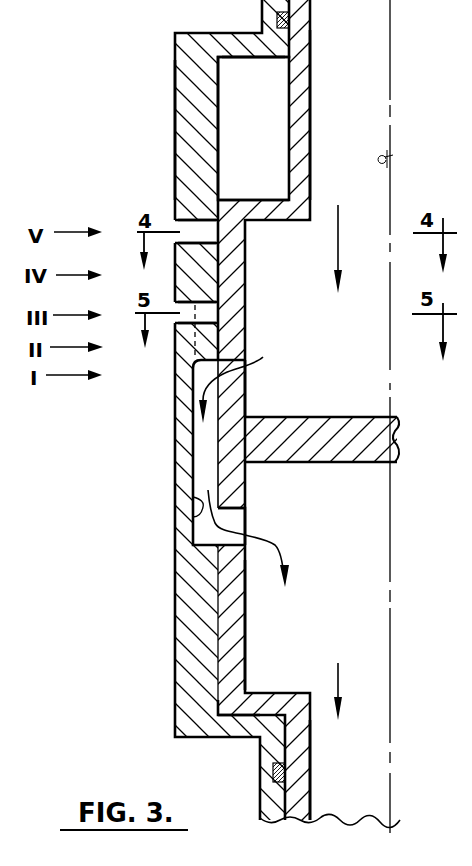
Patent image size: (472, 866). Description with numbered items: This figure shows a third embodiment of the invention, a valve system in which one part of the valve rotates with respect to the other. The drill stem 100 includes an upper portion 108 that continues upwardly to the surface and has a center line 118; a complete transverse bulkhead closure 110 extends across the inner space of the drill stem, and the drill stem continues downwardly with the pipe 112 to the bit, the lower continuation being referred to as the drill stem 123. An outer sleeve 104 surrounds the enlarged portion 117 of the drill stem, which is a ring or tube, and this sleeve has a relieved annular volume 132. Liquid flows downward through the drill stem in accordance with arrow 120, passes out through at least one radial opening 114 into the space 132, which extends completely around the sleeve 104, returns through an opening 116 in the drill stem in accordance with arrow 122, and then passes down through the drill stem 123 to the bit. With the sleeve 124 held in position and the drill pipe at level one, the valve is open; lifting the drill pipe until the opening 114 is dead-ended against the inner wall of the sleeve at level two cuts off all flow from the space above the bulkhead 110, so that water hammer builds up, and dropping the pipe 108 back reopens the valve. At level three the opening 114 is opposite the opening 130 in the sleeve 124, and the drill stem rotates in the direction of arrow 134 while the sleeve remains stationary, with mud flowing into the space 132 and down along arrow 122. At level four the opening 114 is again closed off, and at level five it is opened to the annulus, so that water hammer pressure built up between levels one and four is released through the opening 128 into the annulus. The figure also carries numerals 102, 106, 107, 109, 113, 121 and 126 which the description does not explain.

The drill stem 100 is at (318, 747).
The lower housing portion 102 is at (289, 863).
The outer sleeve 104 is at (168, 643).
The seal ring 106 is at (277, 19).
The cavity 107 is at (258, 200).
The upper portion 108 is at (310, 137).
The cavity upper surface 109 is at (242, 58).
The transverse bulkhead closure 110 is at (370, 417).
The pipe 112 is at (307, 783).
The step 113 is at (258, 715).
The radial opening 114 is at (243, 373).
The opening 116 is at (245, 520).
The enlarged portion 117 is at (245, 630).
The center line 118 is at (390, 212).
The arrow 120 is at (338, 238).
The flow path 121 is at (263, 357).
The arrow 122 is at (275, 545).
The drill stem 123 is at (338, 688).
The sleeve 124 is at (175, 143).
The outer surface 126 is at (310, 97).
The opening 128 is at (203, 232).
The opening 130 is at (197, 307).
The relieved annular volume 132 is at (205, 443).
The arrow 134 is at (192, 518).